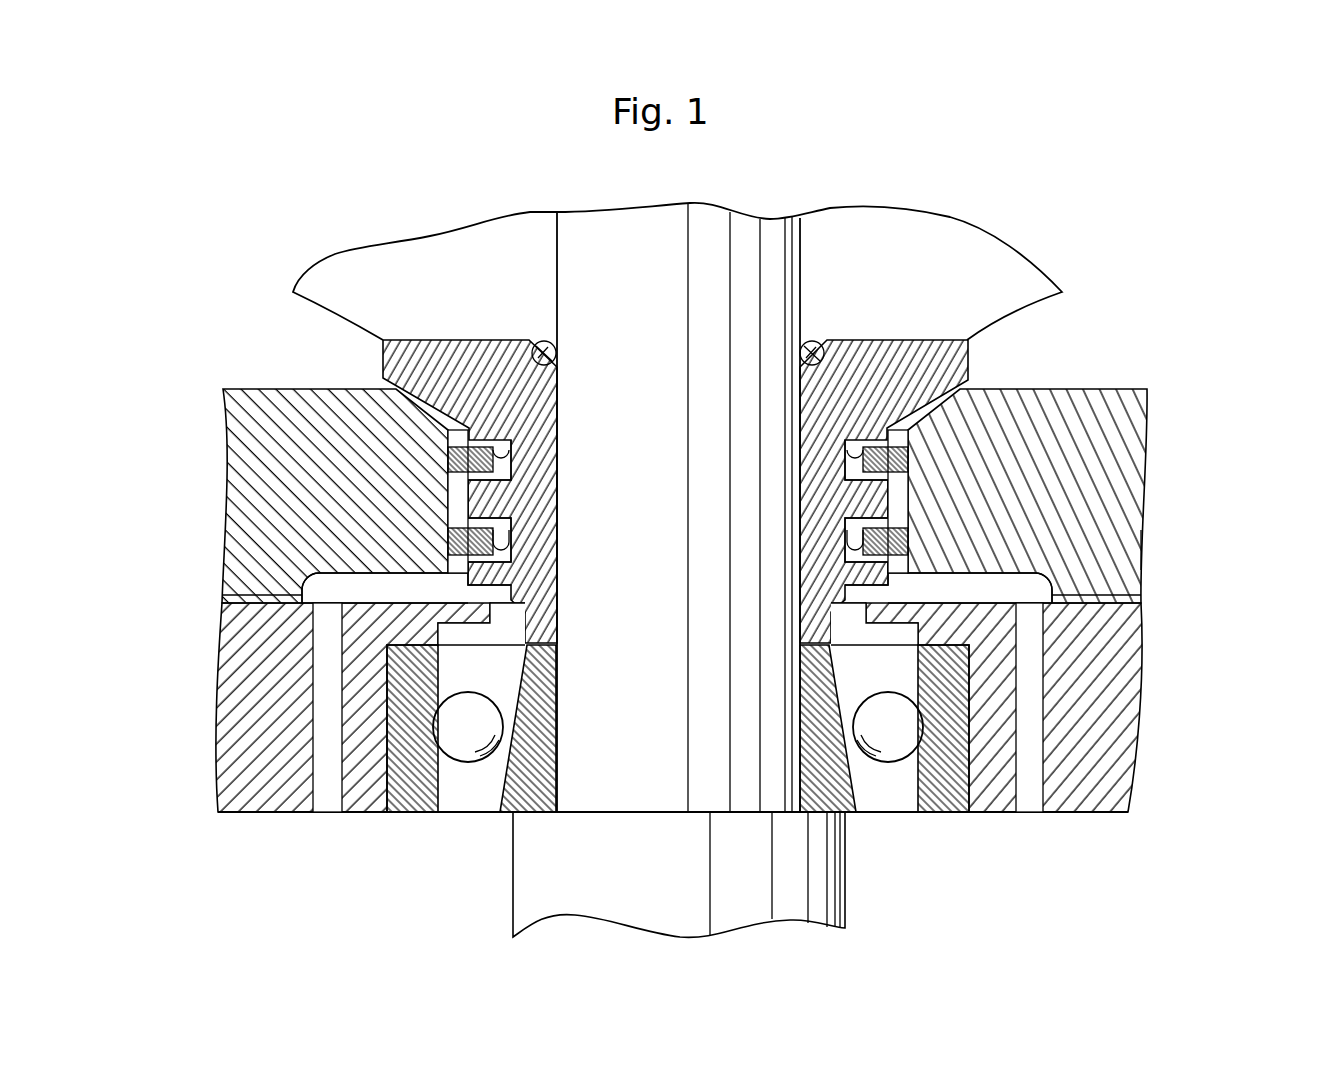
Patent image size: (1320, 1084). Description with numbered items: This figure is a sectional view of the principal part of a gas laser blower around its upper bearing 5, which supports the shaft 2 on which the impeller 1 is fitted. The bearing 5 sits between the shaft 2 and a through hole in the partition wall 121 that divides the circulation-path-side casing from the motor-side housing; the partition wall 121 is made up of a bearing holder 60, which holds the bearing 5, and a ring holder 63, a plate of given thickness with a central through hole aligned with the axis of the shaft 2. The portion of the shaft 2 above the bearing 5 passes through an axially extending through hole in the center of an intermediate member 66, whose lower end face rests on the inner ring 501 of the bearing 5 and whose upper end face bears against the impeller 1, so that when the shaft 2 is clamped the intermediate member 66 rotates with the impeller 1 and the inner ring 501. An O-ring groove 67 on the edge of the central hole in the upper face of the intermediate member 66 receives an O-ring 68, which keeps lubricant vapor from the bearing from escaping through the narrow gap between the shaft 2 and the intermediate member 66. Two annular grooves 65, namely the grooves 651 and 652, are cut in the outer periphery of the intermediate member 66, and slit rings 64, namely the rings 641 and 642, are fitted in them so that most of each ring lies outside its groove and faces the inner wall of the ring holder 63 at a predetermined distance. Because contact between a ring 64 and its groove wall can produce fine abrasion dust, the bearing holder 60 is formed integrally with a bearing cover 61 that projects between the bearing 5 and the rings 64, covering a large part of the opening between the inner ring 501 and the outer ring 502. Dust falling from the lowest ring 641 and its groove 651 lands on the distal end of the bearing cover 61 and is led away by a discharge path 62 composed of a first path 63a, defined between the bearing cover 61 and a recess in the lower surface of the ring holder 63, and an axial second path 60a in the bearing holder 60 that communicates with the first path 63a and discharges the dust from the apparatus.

The impeller 1 is at (437, 255).
The shaft 2 is at (825, 892).
The upper bearing 5 is at (626, 797).
The inner ring 501 is at (525, 792).
The outer ring 502 is at (410, 782).
The bearing holder 60 is at (260, 815).
The second path 60a is at (320, 672).
The bearing cover 61 is at (465, 622).
The discharge path 62 is at (325, 720).
The ring holder 63 is at (280, 430).
The first path 63a is at (300, 588).
The ring 64 is at (912, 542).
The ring 641 is at (915, 522).
The ring 642 is at (885, 462).
The annular groove 65 is at (850, 556).
The annular groove 651 is at (843, 537).
The annular groove 652 is at (905, 382).
The intermediate member 66 is at (885, 365).
The O-ring groove 67 is at (870, 362).
The O-ring 68 is at (818, 343).
The partition wall 121 is at (1152, 551).